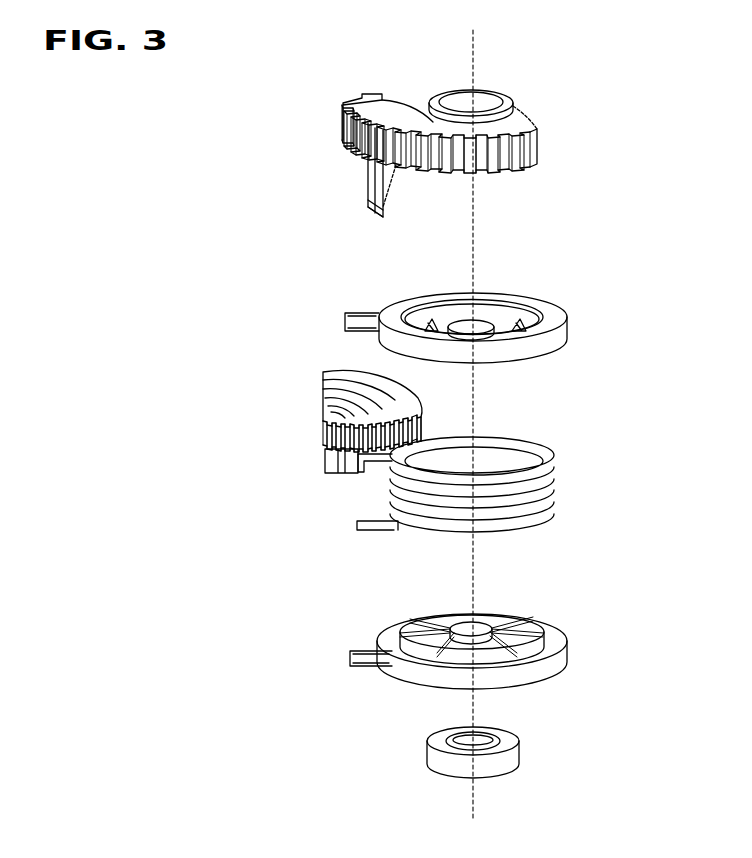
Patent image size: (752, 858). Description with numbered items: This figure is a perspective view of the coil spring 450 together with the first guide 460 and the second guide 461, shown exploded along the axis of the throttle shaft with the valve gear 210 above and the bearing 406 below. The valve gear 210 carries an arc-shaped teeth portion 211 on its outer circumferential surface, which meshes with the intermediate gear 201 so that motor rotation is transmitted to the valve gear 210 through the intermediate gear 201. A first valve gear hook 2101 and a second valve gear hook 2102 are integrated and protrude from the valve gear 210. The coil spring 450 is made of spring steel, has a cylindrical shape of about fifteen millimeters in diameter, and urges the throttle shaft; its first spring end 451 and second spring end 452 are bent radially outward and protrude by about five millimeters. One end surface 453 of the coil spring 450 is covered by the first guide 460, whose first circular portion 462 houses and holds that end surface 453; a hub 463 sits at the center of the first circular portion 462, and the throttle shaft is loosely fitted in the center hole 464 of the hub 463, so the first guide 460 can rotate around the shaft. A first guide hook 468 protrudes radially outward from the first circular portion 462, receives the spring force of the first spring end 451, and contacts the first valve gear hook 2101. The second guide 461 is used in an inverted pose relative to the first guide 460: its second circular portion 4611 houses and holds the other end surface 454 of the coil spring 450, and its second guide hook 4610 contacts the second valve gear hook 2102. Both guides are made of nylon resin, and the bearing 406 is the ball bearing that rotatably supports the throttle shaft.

The valve gear 210 is at (540, 140).
The teeth portion 211 is at (344, 102).
The first valve gear hook 2101 is at (368, 172).
The second valve gear hook 2102 is at (378, 210).
The first guide 460 is at (447, 307).
The first circular portion 462 is at (568, 318).
The hub 463 is at (496, 324).
The center hole 464 is at (455, 332).
The first guide hook 468 is at (345, 322).
The intermediate gear 201 is at (325, 386).
The coil spring 450 is at (433, 490).
The first spring end 451 is at (360, 470).
The second spring end 452 is at (363, 533).
The one end surface 453 is at (505, 438).
The other end surface 454 is at (500, 534).
The second guide 461 is at (452, 647).
The second guide hook 4610 is at (352, 660).
The second circular portion 4611 is at (532, 690).
The bearing 406 is at (520, 752).